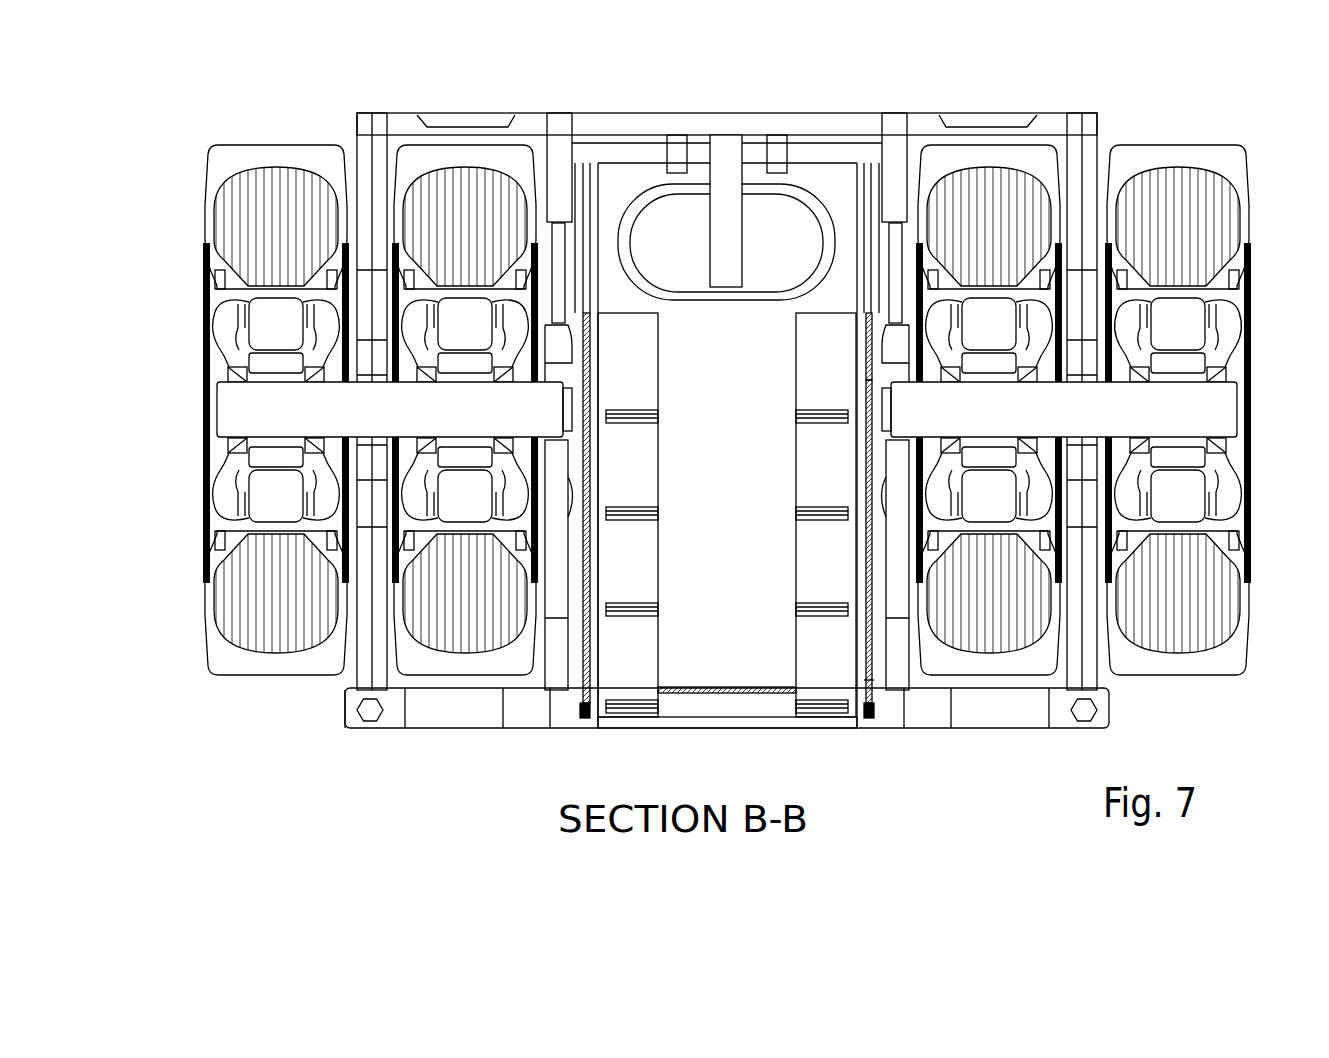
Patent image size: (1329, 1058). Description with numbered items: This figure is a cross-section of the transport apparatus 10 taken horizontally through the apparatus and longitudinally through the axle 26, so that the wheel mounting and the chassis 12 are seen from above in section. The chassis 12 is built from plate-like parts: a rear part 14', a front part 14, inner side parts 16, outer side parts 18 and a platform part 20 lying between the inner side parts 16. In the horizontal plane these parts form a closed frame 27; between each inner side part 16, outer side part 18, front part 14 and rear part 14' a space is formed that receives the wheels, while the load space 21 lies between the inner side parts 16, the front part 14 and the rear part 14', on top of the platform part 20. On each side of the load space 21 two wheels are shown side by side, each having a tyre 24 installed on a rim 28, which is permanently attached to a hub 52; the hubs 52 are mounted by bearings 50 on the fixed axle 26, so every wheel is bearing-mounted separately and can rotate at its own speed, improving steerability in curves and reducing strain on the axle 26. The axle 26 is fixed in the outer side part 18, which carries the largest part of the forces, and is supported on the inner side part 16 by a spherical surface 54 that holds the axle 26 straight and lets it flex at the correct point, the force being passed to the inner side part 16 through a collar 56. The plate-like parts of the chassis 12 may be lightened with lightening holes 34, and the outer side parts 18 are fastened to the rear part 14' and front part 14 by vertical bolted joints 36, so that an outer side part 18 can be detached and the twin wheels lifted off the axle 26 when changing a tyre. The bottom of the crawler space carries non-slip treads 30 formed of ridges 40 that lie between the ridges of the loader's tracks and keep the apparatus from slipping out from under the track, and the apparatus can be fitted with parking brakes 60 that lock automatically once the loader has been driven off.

The transport apparatus 10 is at (1205, 752).
The chassis 12 is at (556, 756).
The front part 14 is at (727, 750).
The rear part 14' is at (727, 104).
The inner side part 16 is at (557, 120).
The outer side part 18 is at (372, 115).
The platform part 20 is at (740, 586).
The load space 21 is at (887, 695).
The tyre 24 is at (236, 140).
The axle 26 is at (388, 424).
The closed frame 27 is at (372, 755).
The rim 28 is at (394, 243).
The non-slip treads 30 is at (791, 491).
The lightening holes 34 is at (730, 300).
The vertical bolted joints 36 is at (360, 711).
The ridges 40 is at (805, 412).
The bearings 50 is at (217, 407).
The hub 52 is at (237, 340).
The spherical surface 54 is at (900, 420).
The collar 56 is at (882, 375).
The parking brakes 60 is at (655, 180).